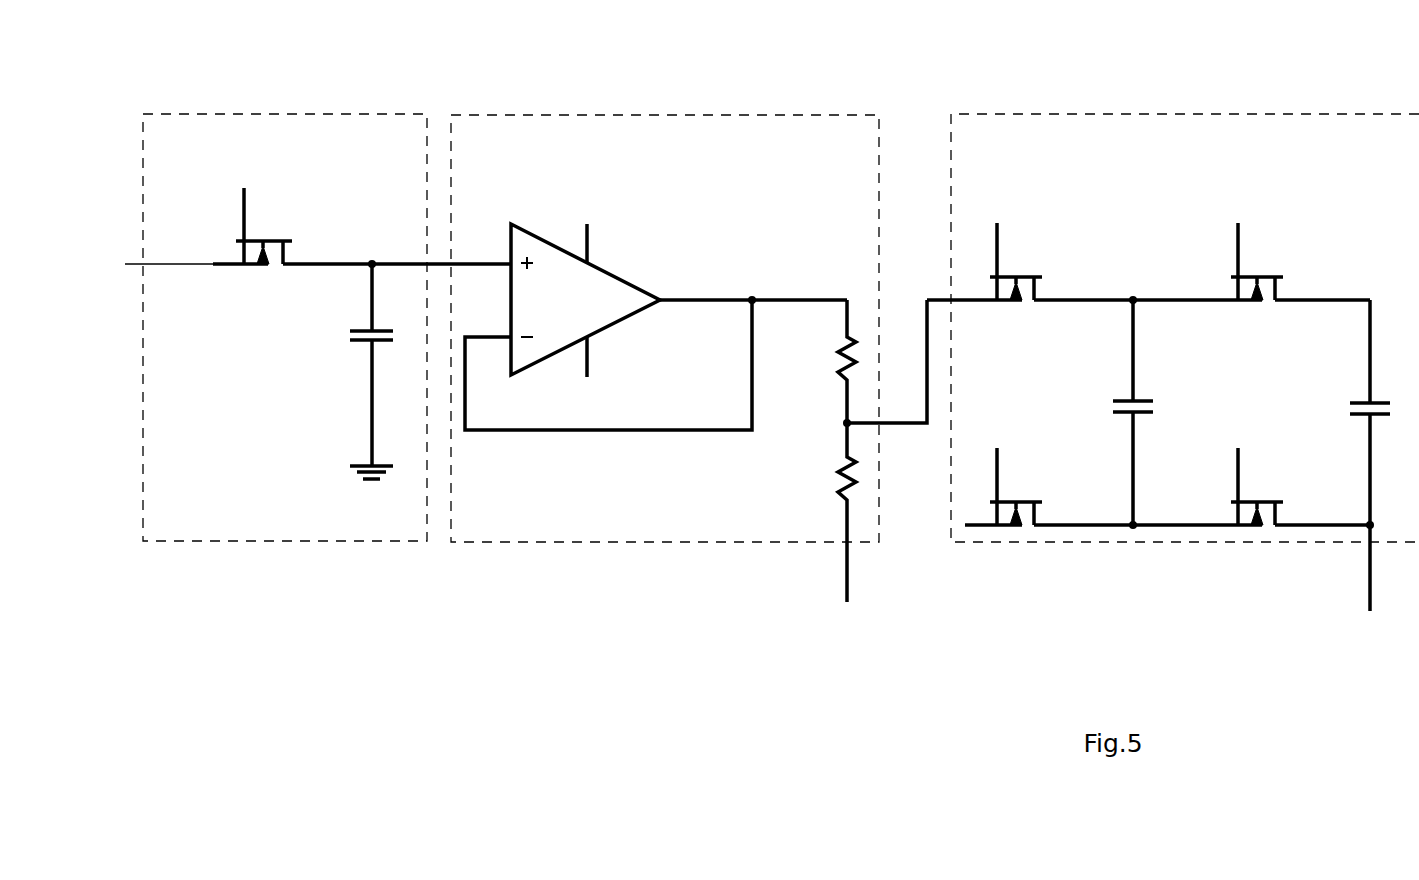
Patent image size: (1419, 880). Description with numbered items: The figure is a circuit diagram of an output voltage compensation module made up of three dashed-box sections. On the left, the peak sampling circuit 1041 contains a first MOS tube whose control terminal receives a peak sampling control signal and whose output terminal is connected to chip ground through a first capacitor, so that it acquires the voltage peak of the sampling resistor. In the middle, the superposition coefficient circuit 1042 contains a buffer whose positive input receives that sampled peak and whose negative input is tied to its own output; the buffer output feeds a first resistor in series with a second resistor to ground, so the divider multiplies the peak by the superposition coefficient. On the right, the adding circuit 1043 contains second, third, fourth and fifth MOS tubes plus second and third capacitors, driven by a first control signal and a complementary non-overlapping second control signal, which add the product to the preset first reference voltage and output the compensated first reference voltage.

The peak sampling circuit 1041 is at (297, 114).
The superposition coefficient circuit 1042 is at (650, 114).
The adding circuit 1043 is at (1205, 114).